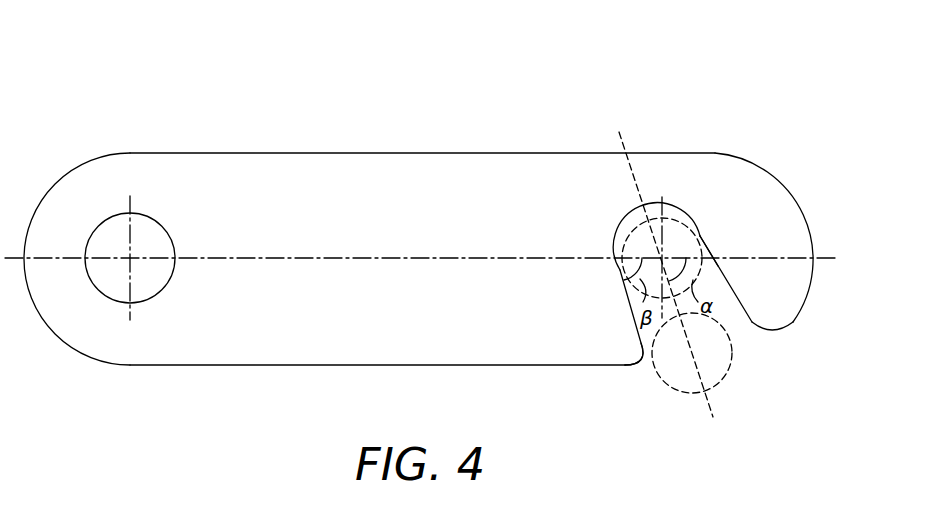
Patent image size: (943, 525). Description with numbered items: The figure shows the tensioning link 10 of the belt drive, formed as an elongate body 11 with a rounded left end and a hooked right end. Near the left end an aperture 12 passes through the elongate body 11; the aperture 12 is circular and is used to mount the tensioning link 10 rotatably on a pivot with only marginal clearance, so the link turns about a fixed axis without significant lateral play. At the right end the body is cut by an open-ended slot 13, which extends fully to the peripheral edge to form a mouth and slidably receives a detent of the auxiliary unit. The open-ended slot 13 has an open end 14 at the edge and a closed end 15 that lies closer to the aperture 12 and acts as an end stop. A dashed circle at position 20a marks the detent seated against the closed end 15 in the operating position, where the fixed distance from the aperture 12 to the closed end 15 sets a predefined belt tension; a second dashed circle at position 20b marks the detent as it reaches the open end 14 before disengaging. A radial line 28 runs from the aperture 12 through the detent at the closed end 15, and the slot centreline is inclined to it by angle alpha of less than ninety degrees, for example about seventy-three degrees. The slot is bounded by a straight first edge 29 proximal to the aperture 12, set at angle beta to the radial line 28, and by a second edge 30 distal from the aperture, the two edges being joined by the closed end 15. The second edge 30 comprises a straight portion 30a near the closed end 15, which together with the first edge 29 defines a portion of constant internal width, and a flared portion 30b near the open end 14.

The tensioning link 10 is at (198, 78).
The elongate body 11 is at (196, 356).
The aperture 12 is at (114, 228).
The open-ended slot 13 is at (639, 370).
The open end 14 is at (744, 338).
The closed end 15 is at (676, 207).
The position of the detent at the closed end 20a is at (630, 226).
The position of the detent at the open end 20b is at (669, 392).
The radial line 28 is at (330, 254).
The first edge 29 is at (632, 312).
The second edge 30 is at (714, 270).
The straight portion 30a is at (704, 240).
The flared portion 30b is at (748, 314).